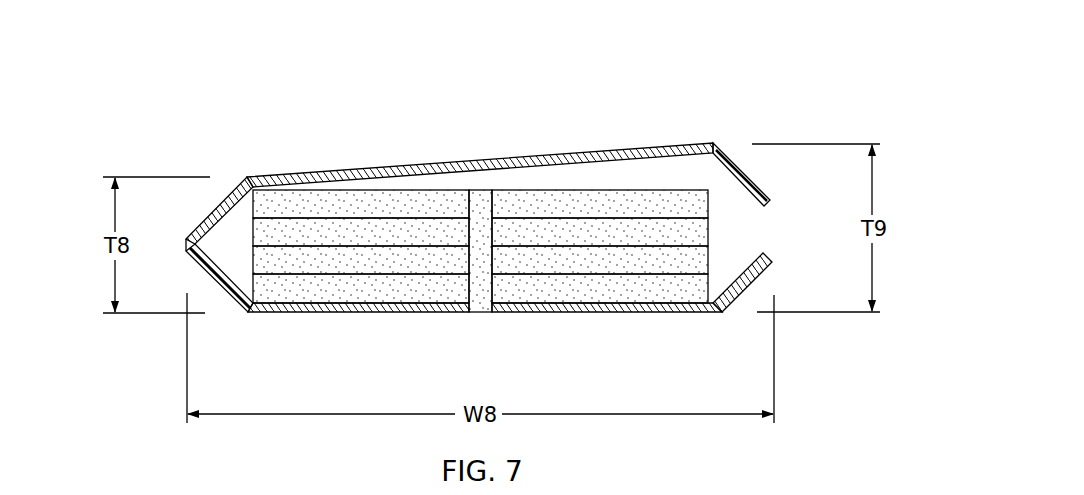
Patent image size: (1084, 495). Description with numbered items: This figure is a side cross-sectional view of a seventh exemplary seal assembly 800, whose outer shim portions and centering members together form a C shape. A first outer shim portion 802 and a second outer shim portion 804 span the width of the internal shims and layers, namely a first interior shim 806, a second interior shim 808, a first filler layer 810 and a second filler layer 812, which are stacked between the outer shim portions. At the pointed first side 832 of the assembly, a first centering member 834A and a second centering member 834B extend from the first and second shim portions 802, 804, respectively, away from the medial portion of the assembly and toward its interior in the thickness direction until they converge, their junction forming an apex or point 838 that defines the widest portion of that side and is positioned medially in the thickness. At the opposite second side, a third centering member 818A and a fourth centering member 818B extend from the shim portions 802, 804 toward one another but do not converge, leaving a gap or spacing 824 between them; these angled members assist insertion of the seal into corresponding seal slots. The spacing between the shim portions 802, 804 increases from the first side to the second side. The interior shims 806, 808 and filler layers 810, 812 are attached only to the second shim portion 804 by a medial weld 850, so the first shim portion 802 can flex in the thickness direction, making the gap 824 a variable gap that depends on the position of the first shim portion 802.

The seal assembly 800 is at (491, 212).
The first outer shim portion 802 is at (600, 153).
The second outer shim portion 804 is at (557, 312).
The first interior shim 806 is at (306, 202).
The second interior shim 808 is at (305, 290).
The first filler layer 810 is at (377, 233).
The second filler layer 812 is at (397, 262).
The third centering member 818A is at (766, 263).
The fourth centering member 818B is at (750, 178).
The gap or spacing 824 is at (770, 223).
The leading edge tip 832 is at (180, 284).
The first centering member 834A is at (194, 297).
The second centering member 834B is at (224, 203).
The apex or point 838 is at (185, 251).
The central stiffener 850 is at (481, 197).